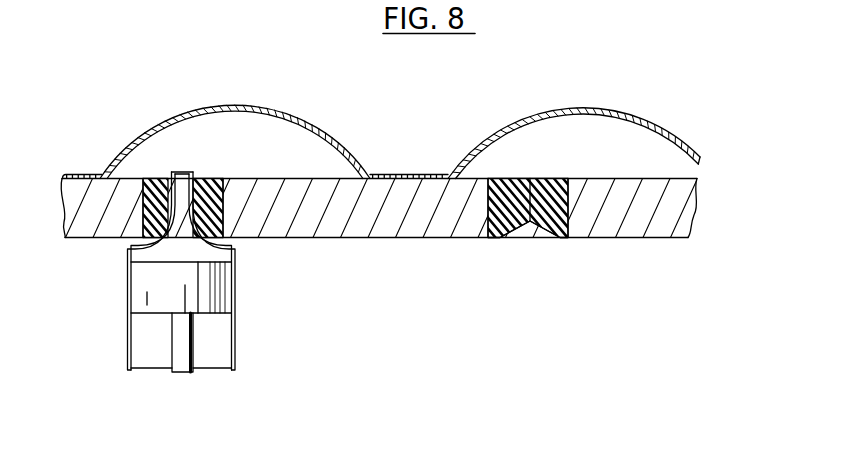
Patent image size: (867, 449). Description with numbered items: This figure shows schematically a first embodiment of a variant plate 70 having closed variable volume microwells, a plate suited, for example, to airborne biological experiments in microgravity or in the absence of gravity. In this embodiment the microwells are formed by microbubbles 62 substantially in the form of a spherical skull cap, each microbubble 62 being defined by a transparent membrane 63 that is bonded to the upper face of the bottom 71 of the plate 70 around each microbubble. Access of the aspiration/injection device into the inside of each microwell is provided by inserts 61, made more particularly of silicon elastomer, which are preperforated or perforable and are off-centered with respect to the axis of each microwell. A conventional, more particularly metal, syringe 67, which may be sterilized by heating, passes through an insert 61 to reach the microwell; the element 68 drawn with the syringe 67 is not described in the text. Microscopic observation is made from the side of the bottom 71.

The insert 61 is at (218, 210).
The microbubble 62 is at (304, 122).
The transparent membrane 63 is at (159, 118).
The syringe 67 is at (122, 307).
The insert plug 68 is at (232, 292).
The plate 70 is at (60, 171).
The bottom 71 is at (394, 215).